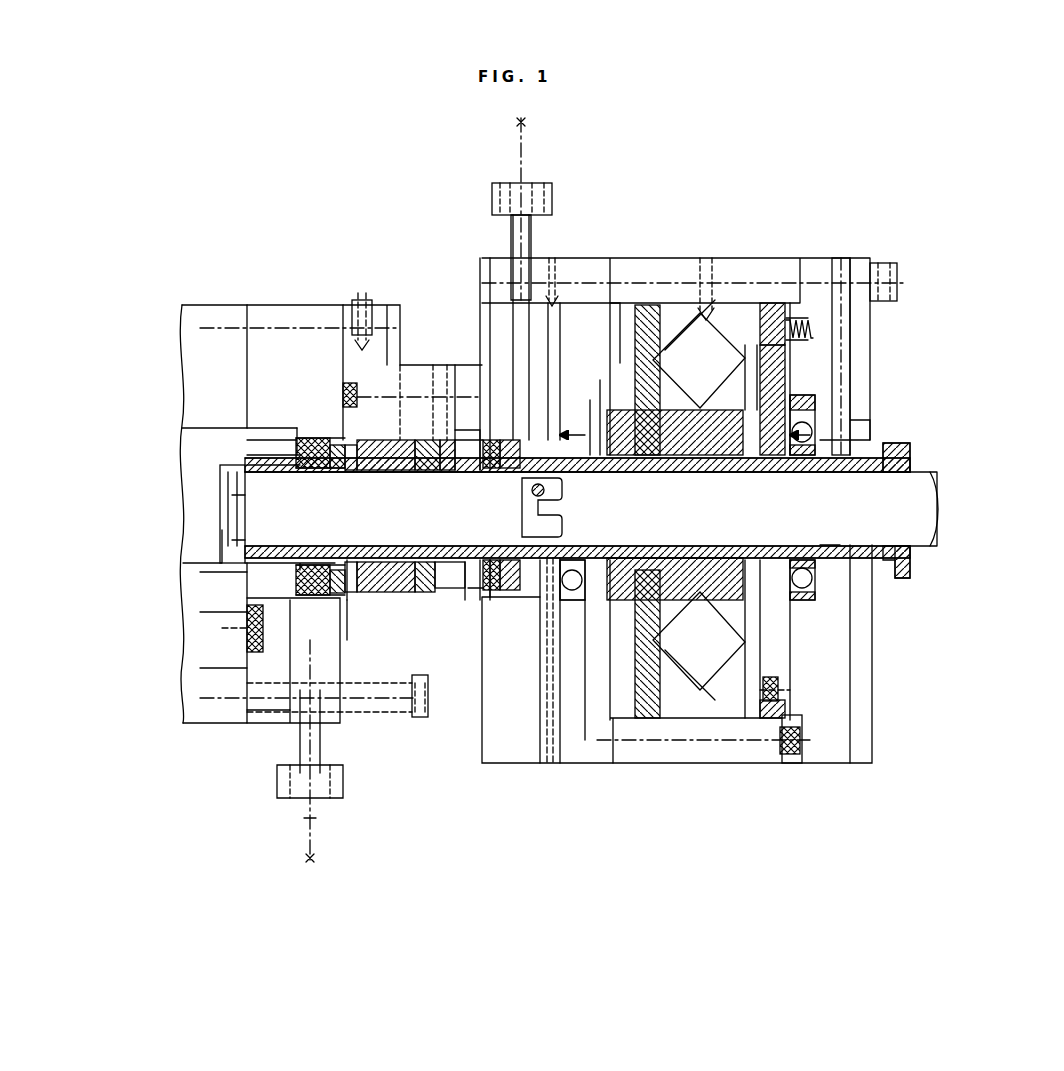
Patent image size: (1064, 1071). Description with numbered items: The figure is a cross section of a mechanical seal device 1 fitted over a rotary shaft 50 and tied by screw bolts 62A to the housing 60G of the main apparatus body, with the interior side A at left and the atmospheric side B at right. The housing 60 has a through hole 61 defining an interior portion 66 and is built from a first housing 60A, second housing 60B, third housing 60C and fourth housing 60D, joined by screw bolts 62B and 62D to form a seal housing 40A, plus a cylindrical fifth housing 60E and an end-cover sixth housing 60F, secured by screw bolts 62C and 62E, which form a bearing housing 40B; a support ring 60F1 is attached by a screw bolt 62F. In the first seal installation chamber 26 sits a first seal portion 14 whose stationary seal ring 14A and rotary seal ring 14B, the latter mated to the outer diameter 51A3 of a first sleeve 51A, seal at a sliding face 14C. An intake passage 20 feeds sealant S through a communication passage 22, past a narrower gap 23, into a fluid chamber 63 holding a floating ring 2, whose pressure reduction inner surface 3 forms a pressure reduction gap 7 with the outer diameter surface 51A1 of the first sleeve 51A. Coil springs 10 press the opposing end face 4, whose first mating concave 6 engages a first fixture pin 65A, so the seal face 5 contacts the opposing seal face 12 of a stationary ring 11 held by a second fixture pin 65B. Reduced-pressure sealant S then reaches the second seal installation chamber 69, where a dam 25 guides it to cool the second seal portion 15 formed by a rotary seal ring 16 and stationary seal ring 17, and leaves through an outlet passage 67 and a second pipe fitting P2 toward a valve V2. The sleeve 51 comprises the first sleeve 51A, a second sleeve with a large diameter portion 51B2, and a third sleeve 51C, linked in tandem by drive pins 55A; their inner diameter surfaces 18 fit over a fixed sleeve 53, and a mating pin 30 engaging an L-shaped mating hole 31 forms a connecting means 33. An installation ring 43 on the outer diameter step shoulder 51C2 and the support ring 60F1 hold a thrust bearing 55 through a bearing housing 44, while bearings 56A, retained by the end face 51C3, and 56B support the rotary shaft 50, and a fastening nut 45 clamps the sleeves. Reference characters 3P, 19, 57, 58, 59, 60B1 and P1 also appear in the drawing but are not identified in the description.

The mechanical seal device 1 is at (938, 246).
The floating ring 2 is at (385, 600).
The pressure reduction inner surface 3 is at (400, 471).
The pressure chamber piece 3P is at (518, 498).
The opposing end face 4 is at (255, 710).
The seal face 5 is at (440, 471).
The first mating concave 6 is at (385, 580).
The pressure reduction gap 7 is at (418, 471).
The coil springs 10 is at (298, 442).
The stationary ring 11 is at (460, 600).
The opposing seal face 12 is at (425, 440).
The first seal portion 14 is at (253, 675).
The stationary seal ring 14A is at (250, 572).
The rotary seal ring 14B is at (262, 668).
The sliding face 14C is at (250, 612).
The second seal portion 15 is at (488, 600).
The rotary seal ring 16 is at (505, 430).
The stationary seal ring 17 is at (552, 290).
The inner diameter surfaces 18 is at (235, 495).
The port 19 is at (510, 480).
The intake passage 20 is at (297, 743).
The communication passage 22 is at (350, 580).
The gap 23 is at (345, 467).
The dam 25 is at (525, 600).
The first seal installation chamber 26 is at (308, 455).
The mating pin 30 is at (560, 554).
The mating hole 31 is at (560, 510).
The connecting means 33 is at (566, 500).
The seal housing 40A is at (322, 227).
The bearing housing 40B is at (705, 763).
The installation ring 43 is at (612, 450).
The bearing housing 44 is at (740, 350).
The fastening nut 45 is at (913, 450).
The rotary shaft 50 is at (914, 504).
The sleeve 51 is at (262, 430).
The first sleeve 51A is at (252, 471).
The outer diameter surface 51A1 is at (395, 440).
The outer diameter 51A3 is at (335, 568).
The large diameter portion 51B2 is at (470, 600).
The third sleeve 51C is at (785, 405).
The outer diameter step shoulder 51C2 is at (690, 430).
The end face 51C3 is at (580, 430).
The fixed sleeve 53 is at (560, 486).
The thrust bearing 55 is at (790, 400).
The drive pins 55A is at (470, 467).
The bearing 56A is at (575, 645).
The bearing 56B is at (820, 600).
The bolt 57 is at (550, 765).
The spring 58 is at (625, 420).
The plate 59 is at (838, 258).
The housing 60 is at (752, 248).
The first housing 60A is at (268, 318).
The second housing 60B is at (585, 745).
The housing portion 60B1 is at (552, 400).
The third housing 60C is at (325, 700).
The fourth housing 60D is at (440, 368).
The fifth housing 60E is at (777, 755).
The sixth housing 60F is at (848, 750).
The support ring 60F1 is at (770, 715).
The housing of main apparatus body 60G is at (207, 328).
The through hole 61 is at (258, 445).
The screw bolts 62A is at (383, 305).
The screw bolt 62B is at (345, 390).
The screw bolt 62C is at (882, 265).
The screw bolt 62D is at (252, 640).
The screw bolt 62E is at (805, 737).
The screw bolt 62F is at (795, 690).
The fluid chamber 63 is at (370, 600).
The first fixture pin 65A is at (360, 600).
The second fixture pin 65B is at (462, 445).
The interior portion 66 is at (240, 465).
The outlet passage 67 is at (500, 190).
The second seal installation chamber 69 is at (488, 445).
The interior side A is at (76, 489).
The atmospheric side B is at (1046, 471).
The sealant S is at (306, 818).
The position P1 is at (308, 852).
The second pipe fitting P2 is at (521, 152).
The valve V2 is at (524, 122).